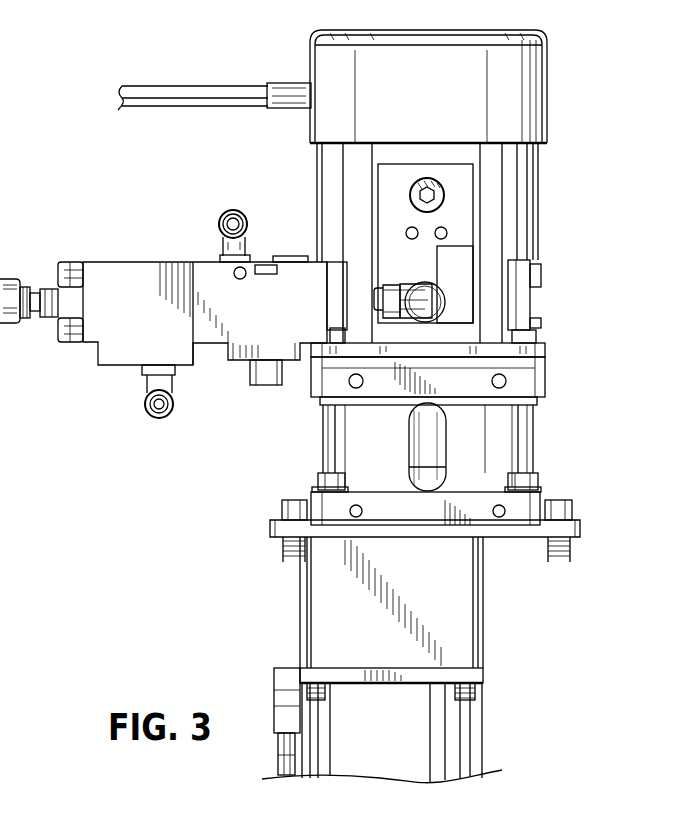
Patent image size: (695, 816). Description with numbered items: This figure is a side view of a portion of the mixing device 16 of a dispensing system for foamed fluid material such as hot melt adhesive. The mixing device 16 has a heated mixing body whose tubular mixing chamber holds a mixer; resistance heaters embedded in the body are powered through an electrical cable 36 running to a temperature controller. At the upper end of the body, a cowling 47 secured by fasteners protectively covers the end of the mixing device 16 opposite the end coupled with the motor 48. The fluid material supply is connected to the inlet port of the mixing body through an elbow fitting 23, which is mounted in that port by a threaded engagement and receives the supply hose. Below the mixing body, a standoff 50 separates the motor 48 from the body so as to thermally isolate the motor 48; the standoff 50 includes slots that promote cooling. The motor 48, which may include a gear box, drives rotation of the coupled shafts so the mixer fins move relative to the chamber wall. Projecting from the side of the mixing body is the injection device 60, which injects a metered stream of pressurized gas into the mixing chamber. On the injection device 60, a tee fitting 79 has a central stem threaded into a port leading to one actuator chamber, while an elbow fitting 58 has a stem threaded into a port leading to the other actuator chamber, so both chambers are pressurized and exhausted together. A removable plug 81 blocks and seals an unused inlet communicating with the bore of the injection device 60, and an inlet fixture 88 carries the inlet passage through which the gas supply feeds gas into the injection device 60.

The mixing device 16 is at (573, 53).
The cowling 47 is at (458, 88).
The electrical cable 36 is at (180, 87).
The elbow fitting 58 is at (233, 209).
The removable plug 81 is at (290, 256).
The injection device 60 is at (130, 260).
The elbow fitting 23 is at (440, 293).
The tee fitting 79 is at (147, 402).
The inlet fixture 88 is at (250, 380).
The standoff 50 is at (355, 449).
The motor 48 is at (460, 620).